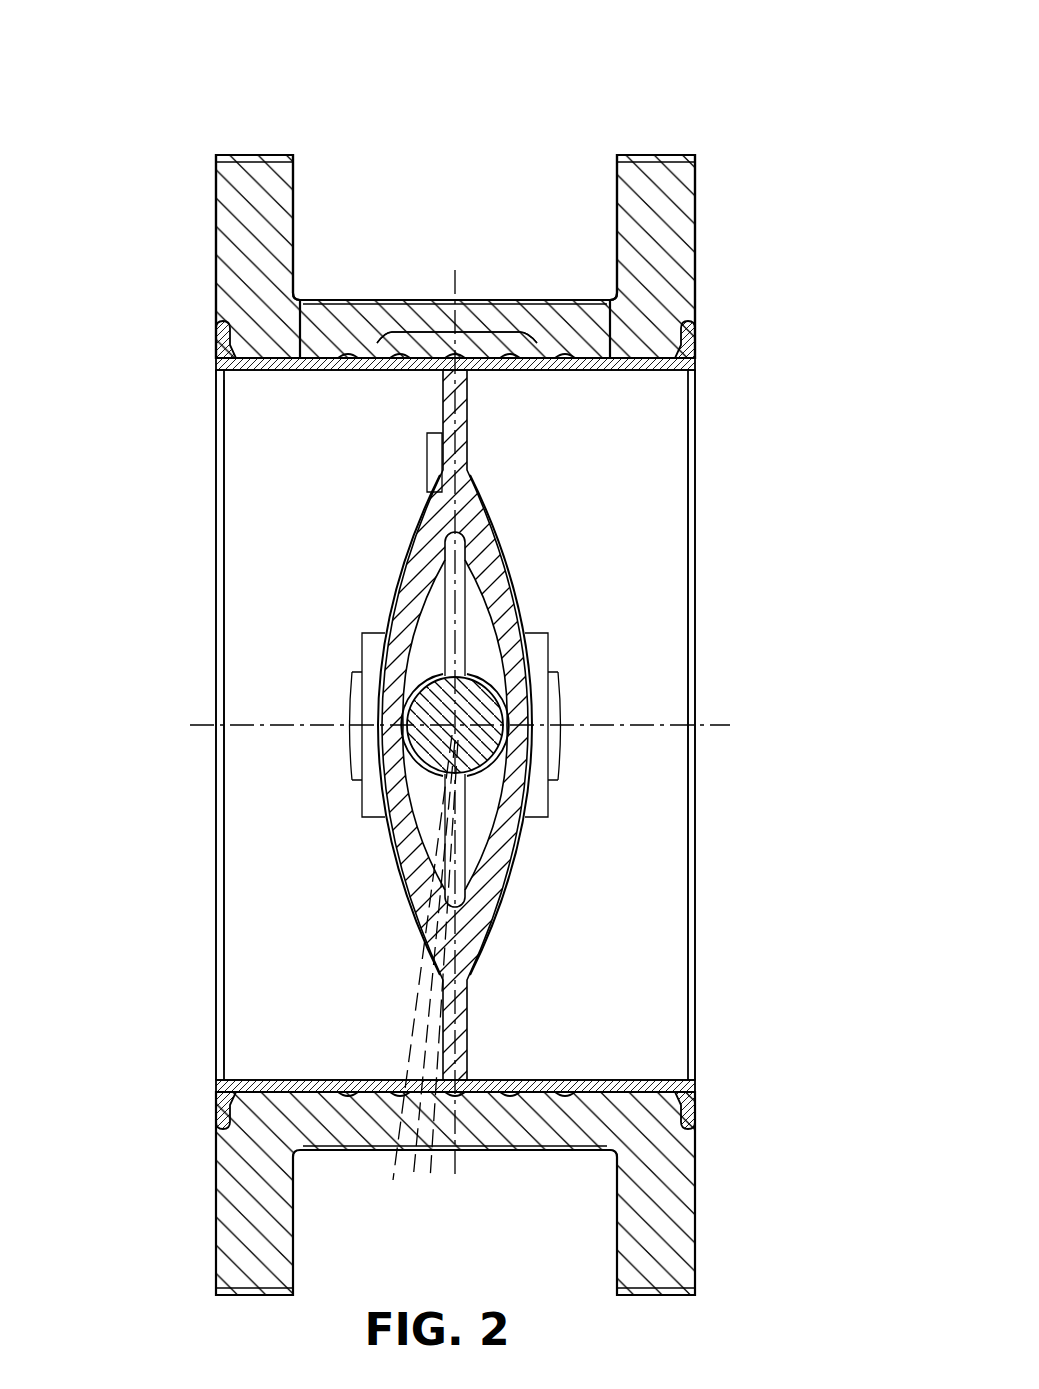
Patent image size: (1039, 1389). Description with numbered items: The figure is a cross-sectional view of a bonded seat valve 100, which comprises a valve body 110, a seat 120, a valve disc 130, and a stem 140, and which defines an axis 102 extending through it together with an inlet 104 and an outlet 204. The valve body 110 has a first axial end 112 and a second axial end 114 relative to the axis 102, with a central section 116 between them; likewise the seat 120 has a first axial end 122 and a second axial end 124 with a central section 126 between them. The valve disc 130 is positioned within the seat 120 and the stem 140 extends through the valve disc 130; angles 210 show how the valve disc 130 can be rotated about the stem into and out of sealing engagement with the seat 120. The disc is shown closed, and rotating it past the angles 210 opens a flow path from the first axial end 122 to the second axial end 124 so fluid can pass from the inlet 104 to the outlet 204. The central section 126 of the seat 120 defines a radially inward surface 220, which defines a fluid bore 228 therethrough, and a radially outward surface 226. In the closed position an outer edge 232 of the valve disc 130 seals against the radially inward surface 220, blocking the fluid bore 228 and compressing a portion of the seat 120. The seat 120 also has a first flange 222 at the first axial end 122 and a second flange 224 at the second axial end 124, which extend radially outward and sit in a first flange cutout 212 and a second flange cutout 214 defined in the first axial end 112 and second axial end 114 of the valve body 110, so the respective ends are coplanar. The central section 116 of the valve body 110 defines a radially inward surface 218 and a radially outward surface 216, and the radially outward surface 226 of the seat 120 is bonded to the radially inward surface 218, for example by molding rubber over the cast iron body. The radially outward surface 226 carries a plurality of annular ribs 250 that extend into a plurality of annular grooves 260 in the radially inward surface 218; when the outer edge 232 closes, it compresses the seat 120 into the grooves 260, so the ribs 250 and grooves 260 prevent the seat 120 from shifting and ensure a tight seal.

The bonded seat valve 100 is at (777, 118).
The axis 102 is at (653, 725).
The inlet 104 is at (268, 559).
The valve body 110 is at (512, 302).
The first axial end 112 is at (215, 232).
The second axial end 114 is at (695, 253).
The central section 116 is at (512, 1152).
The seat 120 is at (658, 372).
The first axial end 122 is at (215, 352).
The second axial end 124 is at (695, 345).
The central section 126 is at (360, 612).
The valve disc 130 is at (400, 862).
The stem 140 is at (462, 738).
The outlet 204 is at (652, 548).
The angles 210 is at (405, 1028).
The first flange cutout 212 is at (225, 335).
The second flange cutout 214 is at (695, 1103).
The radially outward surface 216 is at (570, 296).
The radially inward surface 218 is at (285, 373).
The radially inward surface 220 is at (343, 455).
The first flange 222 is at (218, 1108).
The second flange 224 is at (700, 1105).
The radially outward surface 226 is at (343, 351).
The fluid bore 228 is at (293, 851).
The outer edge 232 is at (471, 1075).
The annular ribs 250 is at (455, 330).
The annular grooves 260 is at (457, 282).